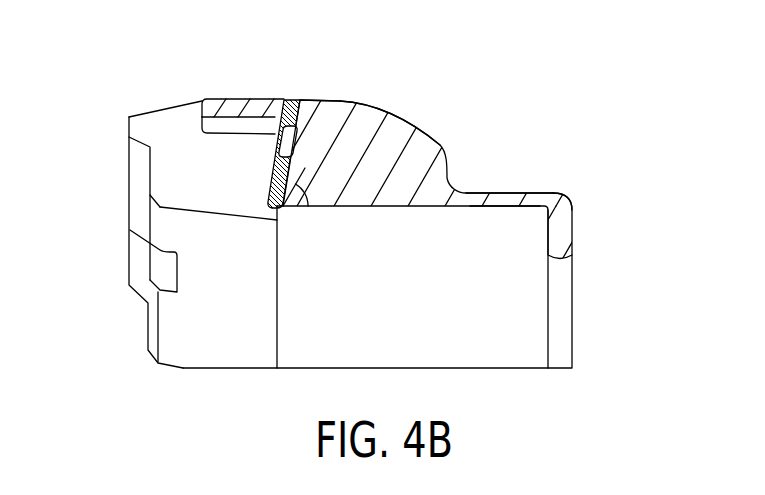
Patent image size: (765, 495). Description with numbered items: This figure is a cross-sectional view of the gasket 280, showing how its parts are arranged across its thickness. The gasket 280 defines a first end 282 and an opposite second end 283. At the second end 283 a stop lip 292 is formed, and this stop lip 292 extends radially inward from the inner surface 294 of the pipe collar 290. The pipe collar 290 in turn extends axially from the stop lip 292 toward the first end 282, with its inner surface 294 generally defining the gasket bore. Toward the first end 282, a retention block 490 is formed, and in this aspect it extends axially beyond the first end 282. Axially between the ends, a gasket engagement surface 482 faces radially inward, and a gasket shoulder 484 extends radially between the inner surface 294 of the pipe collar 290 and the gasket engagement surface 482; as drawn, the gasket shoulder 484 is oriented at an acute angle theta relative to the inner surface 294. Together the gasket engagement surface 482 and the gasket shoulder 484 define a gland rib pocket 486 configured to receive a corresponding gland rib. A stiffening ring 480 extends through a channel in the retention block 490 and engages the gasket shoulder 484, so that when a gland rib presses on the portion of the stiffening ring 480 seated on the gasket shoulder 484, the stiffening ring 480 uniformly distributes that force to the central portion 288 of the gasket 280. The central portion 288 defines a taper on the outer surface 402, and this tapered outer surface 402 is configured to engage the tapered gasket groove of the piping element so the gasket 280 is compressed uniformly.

The gasket 280 is at (577, 99).
The first end 282 is at (128, 127).
The second end 283 is at (565, 190).
The central portion 288 is at (393, 147).
The pipe collar 290 is at (505, 190).
The stop lip 292 is at (562, 230).
The inner surface 294 is at (502, 220).
The outer surface 402 is at (422, 140).
The stiffening ring 480 is at (276, 110).
The gasket engagement surface 482 is at (233, 105).
The gasket shoulder 484 is at (337, 102).
The gland rib pocket 486 is at (230, 164).
The retention block 490 is at (163, 177).